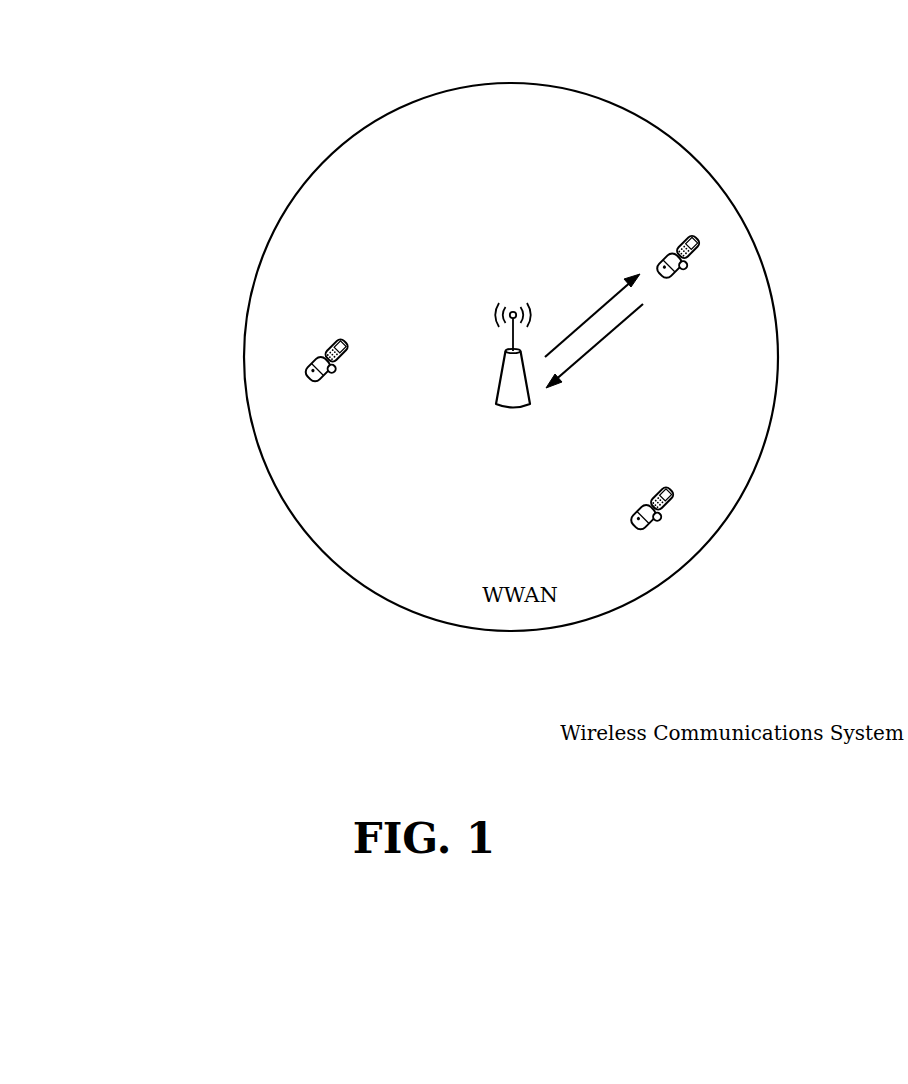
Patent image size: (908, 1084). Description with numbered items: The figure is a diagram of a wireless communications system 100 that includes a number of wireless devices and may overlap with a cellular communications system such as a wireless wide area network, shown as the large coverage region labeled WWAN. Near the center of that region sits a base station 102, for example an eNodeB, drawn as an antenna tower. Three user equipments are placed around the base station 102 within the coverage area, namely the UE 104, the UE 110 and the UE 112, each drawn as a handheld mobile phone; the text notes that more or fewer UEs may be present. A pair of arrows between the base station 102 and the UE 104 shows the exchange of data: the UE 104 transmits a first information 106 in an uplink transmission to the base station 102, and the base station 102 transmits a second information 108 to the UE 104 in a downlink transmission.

The wireless communications system 100 is at (142, 88).
The base station 102 is at (512, 293).
The UE 104 is at (687, 233).
The first information 106 is at (600, 345).
The second information 108 is at (588, 319).
The UE 110 is at (334, 338).
The UE 112 is at (660, 485).